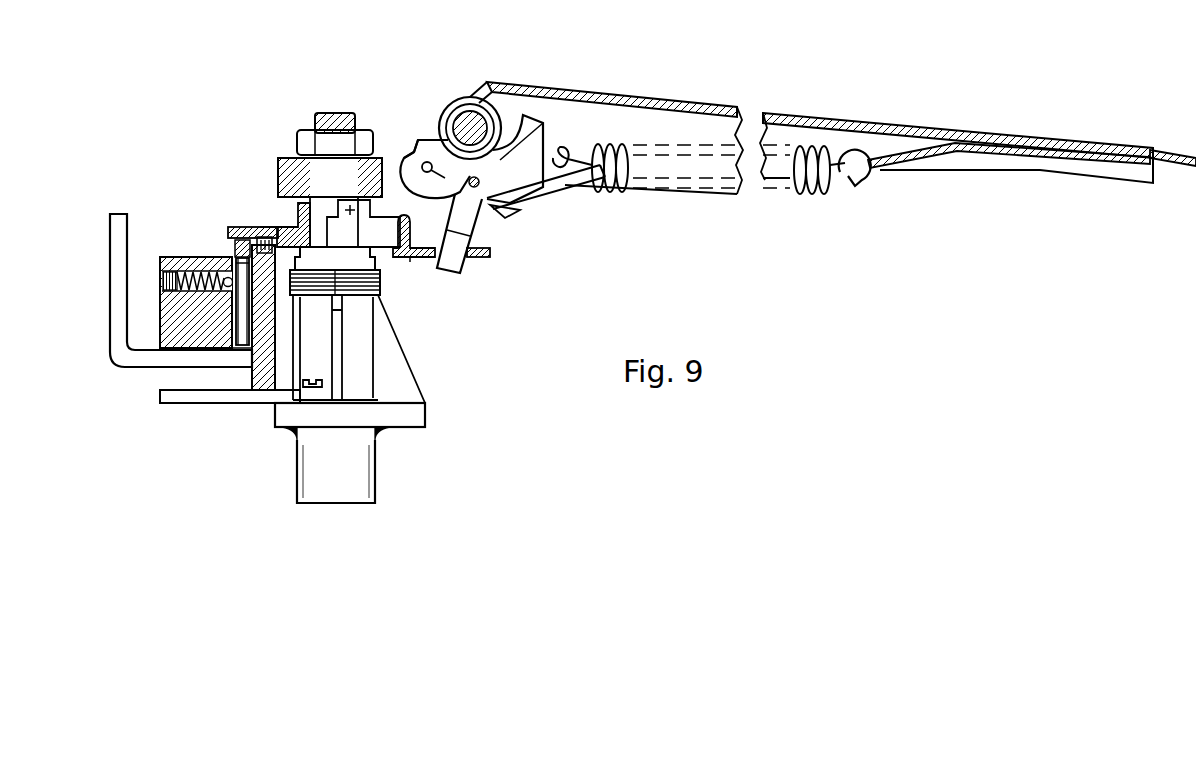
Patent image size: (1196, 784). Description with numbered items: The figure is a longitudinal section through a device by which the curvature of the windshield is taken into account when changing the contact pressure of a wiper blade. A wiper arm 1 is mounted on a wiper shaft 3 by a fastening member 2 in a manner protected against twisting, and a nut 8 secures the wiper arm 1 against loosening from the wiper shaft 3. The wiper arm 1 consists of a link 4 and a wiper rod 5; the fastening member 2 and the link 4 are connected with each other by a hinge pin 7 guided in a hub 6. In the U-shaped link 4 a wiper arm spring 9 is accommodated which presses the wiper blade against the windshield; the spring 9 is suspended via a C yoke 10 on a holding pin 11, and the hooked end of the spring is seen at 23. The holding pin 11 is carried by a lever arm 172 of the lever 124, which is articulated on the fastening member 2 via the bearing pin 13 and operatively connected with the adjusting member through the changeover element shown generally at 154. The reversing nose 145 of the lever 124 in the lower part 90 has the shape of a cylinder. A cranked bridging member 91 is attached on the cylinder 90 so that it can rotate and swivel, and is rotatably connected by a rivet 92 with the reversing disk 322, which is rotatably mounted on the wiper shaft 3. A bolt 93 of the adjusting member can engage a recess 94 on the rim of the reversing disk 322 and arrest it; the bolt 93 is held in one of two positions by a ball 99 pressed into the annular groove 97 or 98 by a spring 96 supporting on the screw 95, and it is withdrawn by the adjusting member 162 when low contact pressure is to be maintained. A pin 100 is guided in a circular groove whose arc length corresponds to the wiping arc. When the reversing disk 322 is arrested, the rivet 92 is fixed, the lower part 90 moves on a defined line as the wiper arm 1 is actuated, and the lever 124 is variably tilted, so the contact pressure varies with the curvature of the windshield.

The wiper arm 1 is at (925, 112).
The fastening member 2 is at (293, 237).
The wiper shaft 3 is at (290, 177).
The link 4 is at (712, 103).
The wiper rod 5 is at (1173, 152).
The hub 6 is at (470, 82).
The hinge pin 7 is at (468, 123).
The nut 8 is at (298, 137).
The wiper arm spring 9 is at (817, 193).
The C yoke 10 is at (560, 183).
The holding pin 11 is at (413, 165).
The bearing pin 13 is at (540, 133).
The spring hook 23 is at (853, 178).
The lower part 90 is at (490, 248).
The cranked bridging member 91 is at (427, 267).
The rivet 92 is at (410, 260).
The bolt 93 is at (230, 247).
The recess 94 is at (227, 250).
The screw 95 is at (160, 282).
The spring 96 is at (196, 295).
The annular groove 97 is at (205, 256).
The annular groove 98 is at (242, 330).
The ball 99 is at (197, 296).
The pin 100 is at (230, 238).
The lever 124 is at (440, 168).
The reversing nose 145 is at (507, 210).
The changeover element 154 is at (210, 190).
The adjusting member 162 is at (157, 227).
The lever arm 172 is at (410, 158).
The reversing disk 322 is at (277, 227).